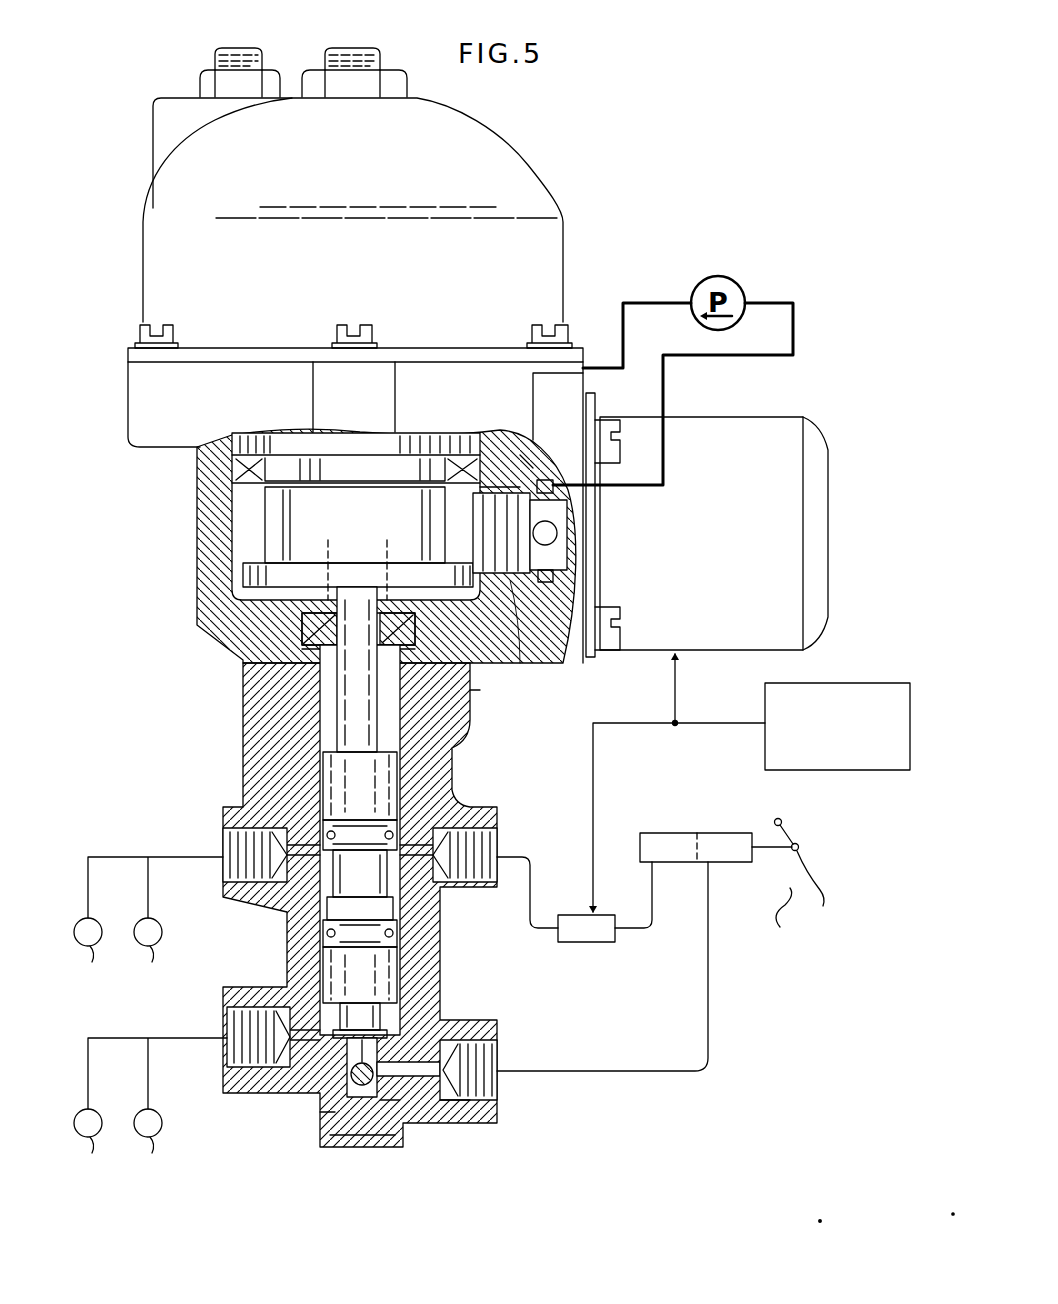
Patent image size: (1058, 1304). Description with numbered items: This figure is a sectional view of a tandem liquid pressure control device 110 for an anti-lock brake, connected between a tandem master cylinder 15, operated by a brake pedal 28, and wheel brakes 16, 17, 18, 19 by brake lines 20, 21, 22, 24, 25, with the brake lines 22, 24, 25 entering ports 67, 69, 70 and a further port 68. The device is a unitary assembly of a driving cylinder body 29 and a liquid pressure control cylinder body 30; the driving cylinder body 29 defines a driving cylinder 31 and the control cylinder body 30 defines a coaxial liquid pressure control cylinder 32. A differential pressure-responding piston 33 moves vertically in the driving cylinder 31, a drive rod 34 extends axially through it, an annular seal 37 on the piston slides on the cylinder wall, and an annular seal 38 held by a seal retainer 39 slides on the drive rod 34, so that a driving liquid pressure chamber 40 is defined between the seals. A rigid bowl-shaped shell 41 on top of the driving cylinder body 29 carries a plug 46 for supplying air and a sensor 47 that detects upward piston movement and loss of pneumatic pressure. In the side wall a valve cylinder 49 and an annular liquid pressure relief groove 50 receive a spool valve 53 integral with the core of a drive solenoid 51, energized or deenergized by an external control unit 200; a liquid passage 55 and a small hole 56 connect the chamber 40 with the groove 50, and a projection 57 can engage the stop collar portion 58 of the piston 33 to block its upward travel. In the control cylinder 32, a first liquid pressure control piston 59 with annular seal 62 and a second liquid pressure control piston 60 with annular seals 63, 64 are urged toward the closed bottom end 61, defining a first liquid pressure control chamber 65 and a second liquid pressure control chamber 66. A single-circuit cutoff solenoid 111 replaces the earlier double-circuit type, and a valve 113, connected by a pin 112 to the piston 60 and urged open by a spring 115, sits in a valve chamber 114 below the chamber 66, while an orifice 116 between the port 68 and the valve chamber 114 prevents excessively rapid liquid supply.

The tandem master cylinder 15 is at (677, 829).
The wheel brake 16 is at (93, 953).
The wheel brake 17 is at (153, 953).
The wheel brake 18 is at (93, 1151).
The wheel brake 19 is at (155, 1151).
The brake line 20 is at (652, 888).
The brake line 21 is at (710, 1016).
The brake line 22 is at (533, 884).
The brake line 24 is at (130, 852).
The brake line 25 is at (148, 1037).
The brake pedal 28 is at (797, 890).
The driving cylinder body 29 is at (145, 448).
The liquid pressure control cylinder body 30 is at (257, 757).
The driving cylinder 31 is at (258, 548).
The liquid pressure control cylinder 32 is at (322, 740).
The differential pressure-responding piston 33 is at (212, 462).
The drive rod 34 is at (352, 700).
The annular seal 37 is at (243, 545).
The annular seal 38 is at (300, 632).
The seal retainer 39 is at (312, 655).
The driving liquid pressure chamber 40 is at (232, 520).
The rigid bowl-shaped shell 41 is at (535, 158).
The plug 46 is at (214, 57).
The sensor 47 is at (324, 58).
The valve cylinder 49 is at (487, 478).
The annular liquid pressure relief groove 50 is at (550, 580).
The drive solenoid 51 is at (712, 417).
The spool valve 53 is at (527, 462).
The liquid passage 55 is at (540, 447).
The small hole 56 is at (560, 524).
The projection 57 is at (510, 580).
The stop collar portion 58 is at (478, 680).
The first liquid pressure control piston 59 is at (393, 797).
The second liquid pressure control piston 60 is at (320, 962).
The closed bottom end 61 is at (340, 1070).
The annular seal 62 is at (400, 830).
The annular seal 63 is at (402, 936).
The annular seal 64 is at (408, 1000).
The first liquid pressure control chamber 65 is at (276, 930).
The second liquid pressure control chamber 66 is at (395, 1038).
The port 67 is at (497, 855).
The port 68 is at (498, 1093).
The port 69 is at (223, 845).
The port 70 is at (225, 1050).
The tandem liquid pressure control device 110 is at (584, 291).
The single-circuit cutoff solenoid 111 is at (598, 946).
The pin 112 is at (497, 1052).
The valve 113 is at (316, 1115).
The valve chamber 114 is at (347, 1143).
The spring 115 is at (403, 1118).
The orifice 116 is at (462, 1112).
The external control unit 200 is at (844, 774).